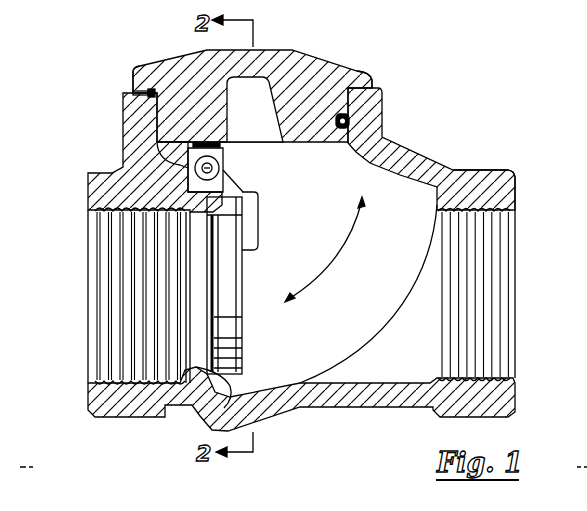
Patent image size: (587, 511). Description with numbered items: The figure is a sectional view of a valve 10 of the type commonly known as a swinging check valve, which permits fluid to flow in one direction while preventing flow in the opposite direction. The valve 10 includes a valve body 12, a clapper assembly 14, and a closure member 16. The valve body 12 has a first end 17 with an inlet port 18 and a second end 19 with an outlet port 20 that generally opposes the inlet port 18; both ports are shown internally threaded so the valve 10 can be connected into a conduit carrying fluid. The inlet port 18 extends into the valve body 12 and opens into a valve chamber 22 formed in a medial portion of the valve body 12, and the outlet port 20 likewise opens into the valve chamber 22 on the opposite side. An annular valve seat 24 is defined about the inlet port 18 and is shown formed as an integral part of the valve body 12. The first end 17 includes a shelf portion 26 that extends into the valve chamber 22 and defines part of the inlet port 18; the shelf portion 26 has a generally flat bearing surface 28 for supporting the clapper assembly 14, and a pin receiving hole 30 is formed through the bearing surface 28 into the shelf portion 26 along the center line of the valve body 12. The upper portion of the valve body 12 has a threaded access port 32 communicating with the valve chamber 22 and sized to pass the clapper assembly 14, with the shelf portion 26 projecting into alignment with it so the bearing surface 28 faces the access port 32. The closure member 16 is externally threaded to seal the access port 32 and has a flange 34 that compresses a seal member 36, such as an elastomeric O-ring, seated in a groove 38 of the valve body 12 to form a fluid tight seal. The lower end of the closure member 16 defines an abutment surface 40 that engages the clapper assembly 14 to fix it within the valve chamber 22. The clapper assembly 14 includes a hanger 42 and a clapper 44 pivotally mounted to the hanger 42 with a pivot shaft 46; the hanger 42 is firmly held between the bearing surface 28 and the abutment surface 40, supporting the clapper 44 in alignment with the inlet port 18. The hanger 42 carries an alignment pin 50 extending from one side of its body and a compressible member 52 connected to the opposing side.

The valve 10 is at (474, 78).
The valve body 12 is at (441, 160).
The clapper assembly 14 is at (245, 283).
The closure member 16 is at (316, 54).
The first end 17 is at (88, 195).
The inlet port 18 is at (107, 368).
The second end 19 is at (518, 188).
The outlet port 20 is at (502, 368).
The valve chamber 22 is at (288, 400).
The valve seat 24 is at (215, 405).
The shelf portion 26 is at (157, 143).
The bearing surface 28 is at (187, 165).
The pin receiving hole 30 is at (191, 200).
The access port 32 is at (352, 126).
The flange 34 is at (133, 80).
The seal member 36 is at (362, 73).
The groove 38 is at (133, 93).
The abutment surface 40 is at (182, 145).
The hanger 42 is at (233, 148).
The clapper 44 is at (242, 315).
The pivot shaft 46 is at (220, 170).
The alignment pin 50 is at (240, 195).
The compressible member 52 is at (227, 142).